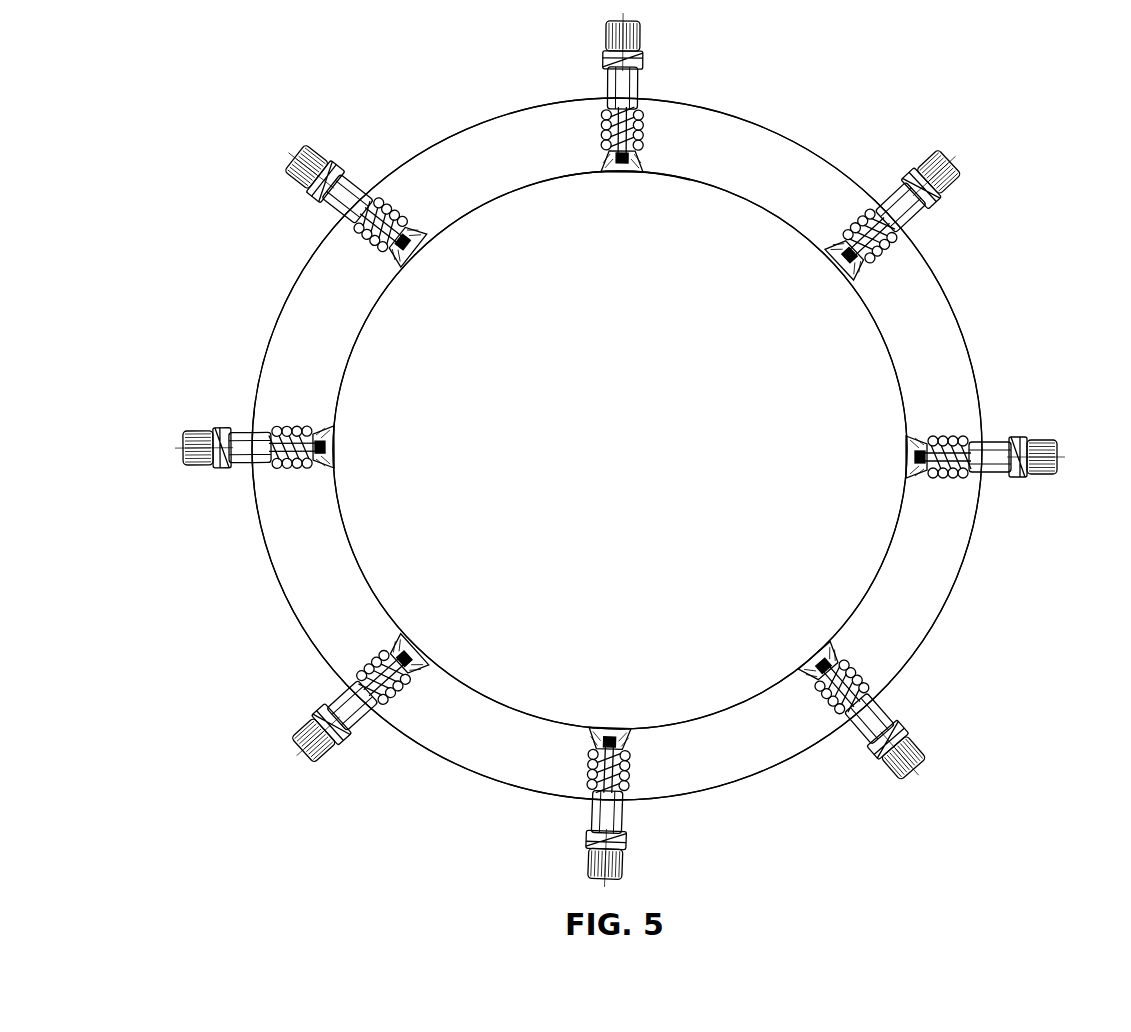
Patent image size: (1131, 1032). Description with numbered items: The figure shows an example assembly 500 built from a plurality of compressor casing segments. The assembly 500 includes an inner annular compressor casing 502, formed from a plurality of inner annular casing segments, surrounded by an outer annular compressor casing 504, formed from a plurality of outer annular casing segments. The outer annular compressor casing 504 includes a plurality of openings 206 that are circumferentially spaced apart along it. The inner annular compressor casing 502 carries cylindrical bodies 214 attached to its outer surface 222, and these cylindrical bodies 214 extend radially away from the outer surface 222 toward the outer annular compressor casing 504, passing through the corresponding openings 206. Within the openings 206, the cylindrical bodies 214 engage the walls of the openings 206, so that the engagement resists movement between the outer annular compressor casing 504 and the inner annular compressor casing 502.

The assembly 500 is at (158, 72).
The inner annular compressor casing 502 is at (477, 207).
The outer annular compressor casing 504 is at (708, 105).
The outer surface 222 is at (670, 174).
The openings 206 is at (596, 80).
The cylindrical bodies 214 is at (628, 73).